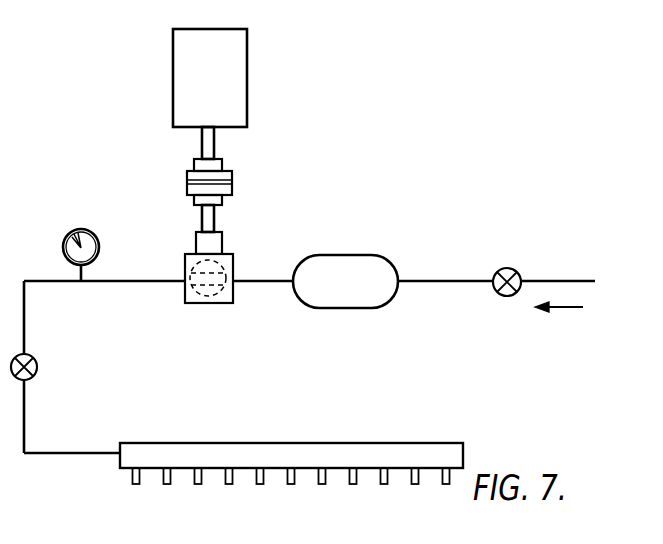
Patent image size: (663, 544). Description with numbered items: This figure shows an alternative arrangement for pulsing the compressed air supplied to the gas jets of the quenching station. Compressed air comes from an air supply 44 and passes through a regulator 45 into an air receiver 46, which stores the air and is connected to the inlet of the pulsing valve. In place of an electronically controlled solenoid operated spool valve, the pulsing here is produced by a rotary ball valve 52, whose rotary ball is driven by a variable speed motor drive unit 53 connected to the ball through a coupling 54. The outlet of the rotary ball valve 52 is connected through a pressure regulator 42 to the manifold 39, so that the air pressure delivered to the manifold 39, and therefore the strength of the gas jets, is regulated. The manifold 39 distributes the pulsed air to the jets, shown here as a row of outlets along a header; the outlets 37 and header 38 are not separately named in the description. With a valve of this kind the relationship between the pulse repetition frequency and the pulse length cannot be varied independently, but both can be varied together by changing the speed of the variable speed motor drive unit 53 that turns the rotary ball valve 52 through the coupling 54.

The nozzles 37 is at (139, 485).
The manifold 38 is at (270, 443).
The manifold 39 is at (68, 453).
The pressure regulator 42 is at (38, 367).
The air supply 44 is at (568, 281).
The regulator 45 is at (505, 268).
The air receiver 46 is at (367, 255).
The rotary ball valve 52 is at (233, 258).
The variable speed motor drive unit 53 is at (240, 97).
The coupling 54 is at (187, 174).